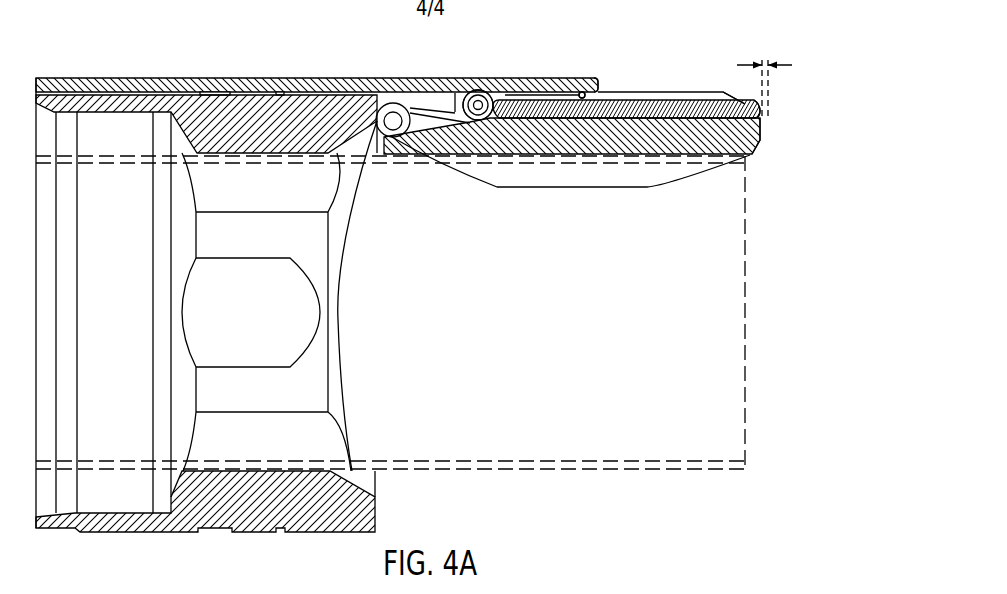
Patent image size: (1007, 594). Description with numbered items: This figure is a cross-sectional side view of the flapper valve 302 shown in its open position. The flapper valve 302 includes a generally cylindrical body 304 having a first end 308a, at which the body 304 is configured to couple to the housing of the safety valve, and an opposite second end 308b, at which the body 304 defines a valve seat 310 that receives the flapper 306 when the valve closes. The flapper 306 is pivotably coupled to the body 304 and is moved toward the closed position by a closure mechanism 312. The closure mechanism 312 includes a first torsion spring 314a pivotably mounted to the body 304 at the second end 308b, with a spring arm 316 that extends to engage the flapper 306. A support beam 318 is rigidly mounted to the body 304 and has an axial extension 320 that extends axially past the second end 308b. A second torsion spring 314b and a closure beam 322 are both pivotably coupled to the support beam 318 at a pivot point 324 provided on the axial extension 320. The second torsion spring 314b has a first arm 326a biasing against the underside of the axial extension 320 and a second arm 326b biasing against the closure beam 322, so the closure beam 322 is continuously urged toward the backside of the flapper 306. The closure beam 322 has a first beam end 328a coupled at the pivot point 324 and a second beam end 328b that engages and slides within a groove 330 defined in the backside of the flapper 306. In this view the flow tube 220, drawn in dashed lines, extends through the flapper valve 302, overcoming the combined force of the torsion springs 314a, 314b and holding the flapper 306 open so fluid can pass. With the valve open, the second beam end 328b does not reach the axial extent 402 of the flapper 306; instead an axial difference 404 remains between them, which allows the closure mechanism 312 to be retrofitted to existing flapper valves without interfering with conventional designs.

The flapper valve 302 is at (617, 414).
The flow tube 220 is at (521, 460).
The body 304 is at (302, 105).
The flapper 306 is at (672, 158).
The first end 308a is at (52, 70).
The second end 308b is at (384, 525).
The valve seat 310 is at (357, 464).
The closure mechanism 312 is at (431, 88).
The first torsion spring 314a is at (392, 131).
The second torsion spring 314b is at (478, 112).
The spring arm 316 is at (457, 100).
The support beam 318 is at (192, 91).
The axial extension 320 is at (611, 75).
The closure beam 322 is at (693, 103).
The pivot point 324 is at (480, 90).
The first arm 326a is at (581, 90).
The second arm 326b is at (582, 95).
The first beam end 328a is at (509, 87).
The second beam end 328b is at (762, 100).
The groove 330 is at (724, 93).
The axial extent 402 is at (762, 136).
The axial difference 404 is at (790, 65).